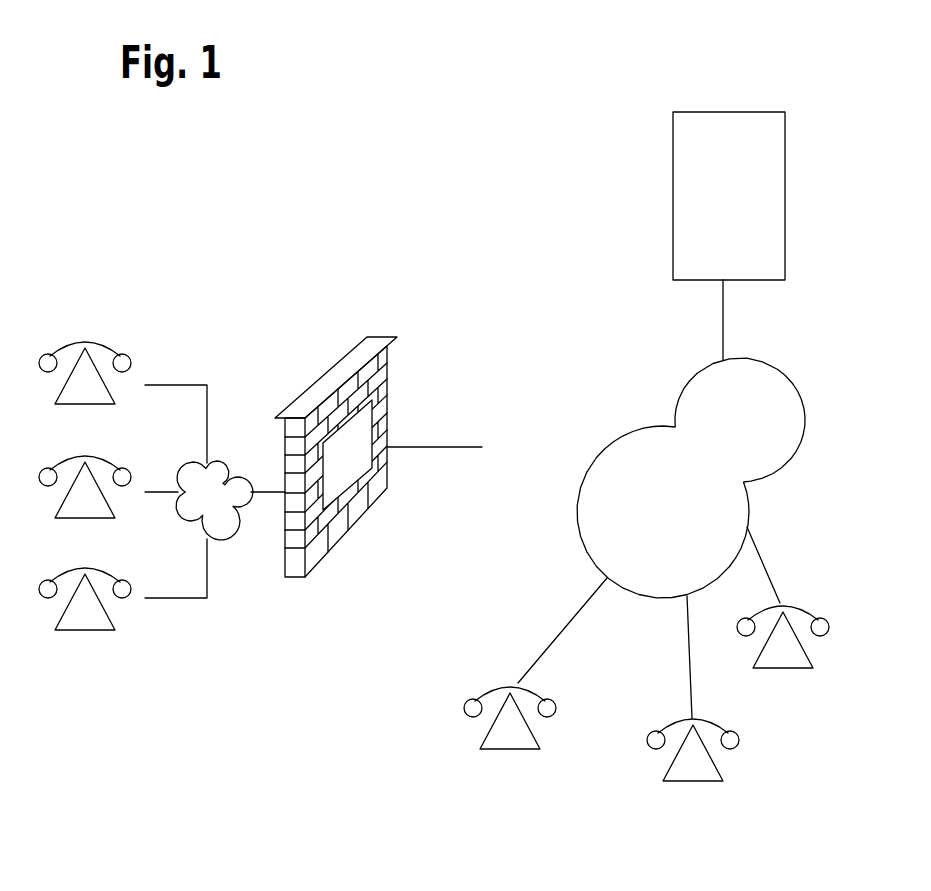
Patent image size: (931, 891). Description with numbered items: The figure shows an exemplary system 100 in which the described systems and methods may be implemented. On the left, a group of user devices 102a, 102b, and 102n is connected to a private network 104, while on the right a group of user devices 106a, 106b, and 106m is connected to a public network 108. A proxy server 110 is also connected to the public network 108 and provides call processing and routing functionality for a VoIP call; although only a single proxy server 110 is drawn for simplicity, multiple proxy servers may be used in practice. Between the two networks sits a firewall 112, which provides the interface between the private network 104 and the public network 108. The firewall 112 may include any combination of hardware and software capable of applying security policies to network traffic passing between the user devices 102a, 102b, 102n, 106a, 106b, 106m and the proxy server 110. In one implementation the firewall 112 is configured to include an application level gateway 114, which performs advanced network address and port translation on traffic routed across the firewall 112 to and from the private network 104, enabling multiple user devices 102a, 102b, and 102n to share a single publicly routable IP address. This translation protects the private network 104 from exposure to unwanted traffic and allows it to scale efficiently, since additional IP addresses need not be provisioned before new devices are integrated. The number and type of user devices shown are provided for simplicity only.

The system 100 is at (445, 266).
The user device 102a is at (79, 370).
The user device 102b is at (81, 505).
The user device 102n is at (84, 612).
The private network 104 is at (212, 467).
The user device 106a is at (505, 745).
The user device 106b is at (692, 768).
The user device 106m is at (780, 660).
The public network 108 is at (563, 510).
The proxy server 110 is at (690, 237).
The firewall 112 is at (347, 523).
The application level gateway (ALG) 114 is at (352, 430).